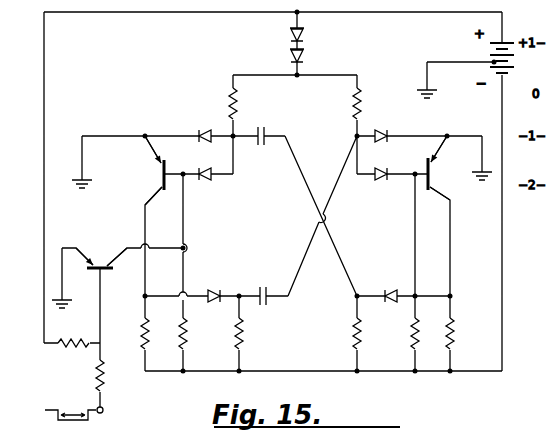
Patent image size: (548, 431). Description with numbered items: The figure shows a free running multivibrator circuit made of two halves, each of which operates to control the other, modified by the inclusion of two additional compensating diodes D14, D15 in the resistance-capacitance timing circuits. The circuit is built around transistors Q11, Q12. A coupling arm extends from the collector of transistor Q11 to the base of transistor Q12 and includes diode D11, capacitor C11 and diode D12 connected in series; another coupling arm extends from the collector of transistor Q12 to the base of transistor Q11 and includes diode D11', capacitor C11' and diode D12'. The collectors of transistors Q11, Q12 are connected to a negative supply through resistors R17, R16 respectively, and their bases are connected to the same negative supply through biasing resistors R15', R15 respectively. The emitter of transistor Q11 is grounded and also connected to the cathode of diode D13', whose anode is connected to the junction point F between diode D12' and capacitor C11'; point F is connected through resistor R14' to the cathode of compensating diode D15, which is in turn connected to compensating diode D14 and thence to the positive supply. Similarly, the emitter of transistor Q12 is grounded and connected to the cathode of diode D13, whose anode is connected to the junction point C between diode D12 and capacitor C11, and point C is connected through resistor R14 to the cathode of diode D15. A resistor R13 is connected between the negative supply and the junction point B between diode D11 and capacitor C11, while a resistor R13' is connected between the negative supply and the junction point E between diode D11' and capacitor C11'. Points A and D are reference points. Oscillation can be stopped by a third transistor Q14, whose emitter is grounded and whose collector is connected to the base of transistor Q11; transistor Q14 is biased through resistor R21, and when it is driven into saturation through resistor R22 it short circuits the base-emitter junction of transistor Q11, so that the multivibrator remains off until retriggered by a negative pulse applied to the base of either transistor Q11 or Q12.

The compensating diode D14 is at (315, 33).
The compensating diode D15 is at (315, 57).
The resistor R14' is at (252, 103).
The resistor R14 is at (372, 103).
The diode D13' is at (200, 125).
The diode D13 is at (398, 126).
The diode D12' is at (202, 164).
The diode D12 is at (390, 165).
The capacitor C11' is at (263, 147).
The capacitor C11 is at (272, 284).
The diode D11 is at (213, 286).
The diode D11' is at (381, 284).
The transistor Q11 is at (141, 170).
The transistor Q12 is at (451, 168).
The third transistor Q14 is at (101, 249).
The resistor R17 is at (129, 333).
The biasing resistor R15' is at (199, 333).
The resistor R13 is at (256, 333).
The resistor R13' is at (338, 333).
The biasing resistor R15 is at (399, 333).
The resistor R16 is at (467, 333).
The resistor R21 is at (72, 353).
The resistor R22 is at (116, 375).
The reference point A is at (137, 296).
The junction point B is at (235, 287).
The junction point C is at (349, 130).
The reference point D is at (458, 296).
The junction point E is at (348, 296).
The junction point F is at (238, 129).